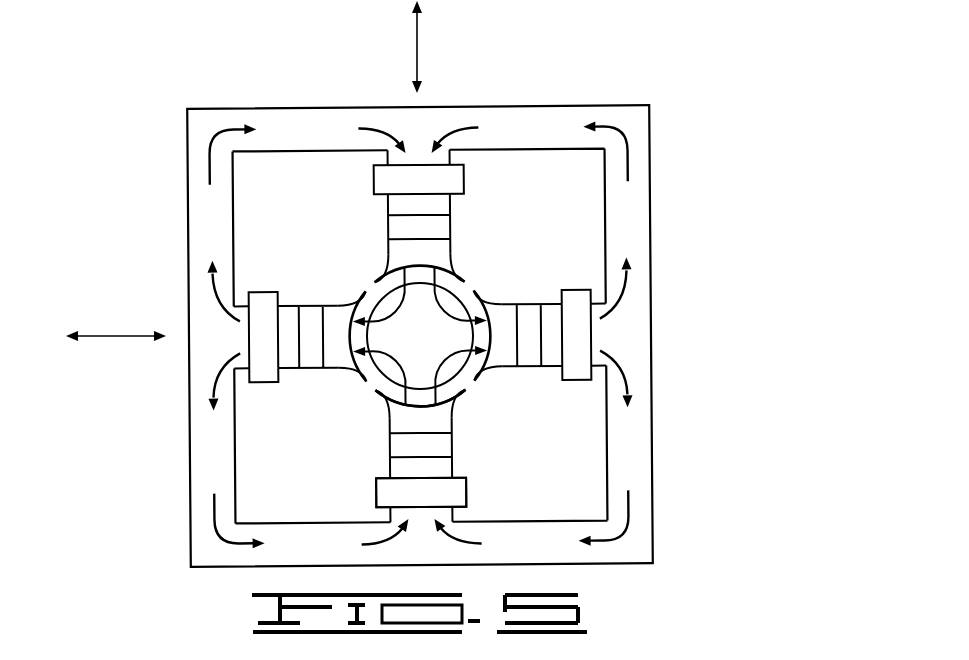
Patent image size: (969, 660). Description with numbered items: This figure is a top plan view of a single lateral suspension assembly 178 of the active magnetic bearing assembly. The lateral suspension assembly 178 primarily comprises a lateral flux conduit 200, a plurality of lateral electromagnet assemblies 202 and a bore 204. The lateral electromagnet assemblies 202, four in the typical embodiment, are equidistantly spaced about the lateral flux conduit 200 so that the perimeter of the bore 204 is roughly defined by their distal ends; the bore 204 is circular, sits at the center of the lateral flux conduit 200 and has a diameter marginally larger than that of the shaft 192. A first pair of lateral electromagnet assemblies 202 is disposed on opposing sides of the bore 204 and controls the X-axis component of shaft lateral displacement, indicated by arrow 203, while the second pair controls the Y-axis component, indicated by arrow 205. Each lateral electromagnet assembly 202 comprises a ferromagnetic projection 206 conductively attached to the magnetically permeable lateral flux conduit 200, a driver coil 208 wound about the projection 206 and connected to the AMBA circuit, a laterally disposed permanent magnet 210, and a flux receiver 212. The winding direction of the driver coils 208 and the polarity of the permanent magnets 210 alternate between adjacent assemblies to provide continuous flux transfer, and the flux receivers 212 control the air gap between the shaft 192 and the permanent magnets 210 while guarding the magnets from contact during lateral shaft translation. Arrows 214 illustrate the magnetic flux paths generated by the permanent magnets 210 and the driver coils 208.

The lateral suspension assembly 178 is at (674, 348).
The shaft 192 is at (438, 318).
The lateral flux conduit 200 is at (640, 458).
The lateral electromagnet assemblies 202 is at (494, 476).
The arrow 203 is at (113, 330).
The bore 204 is at (375, 380).
The arrow 205 is at (412, 50).
The ferromagnetic projections 206 is at (377, 503).
The driver coils 208 is at (582, 337).
The permanent magnets 210 is at (427, 226).
The flux receivers 212 is at (460, 404).
The arrows 214 is at (625, 135).